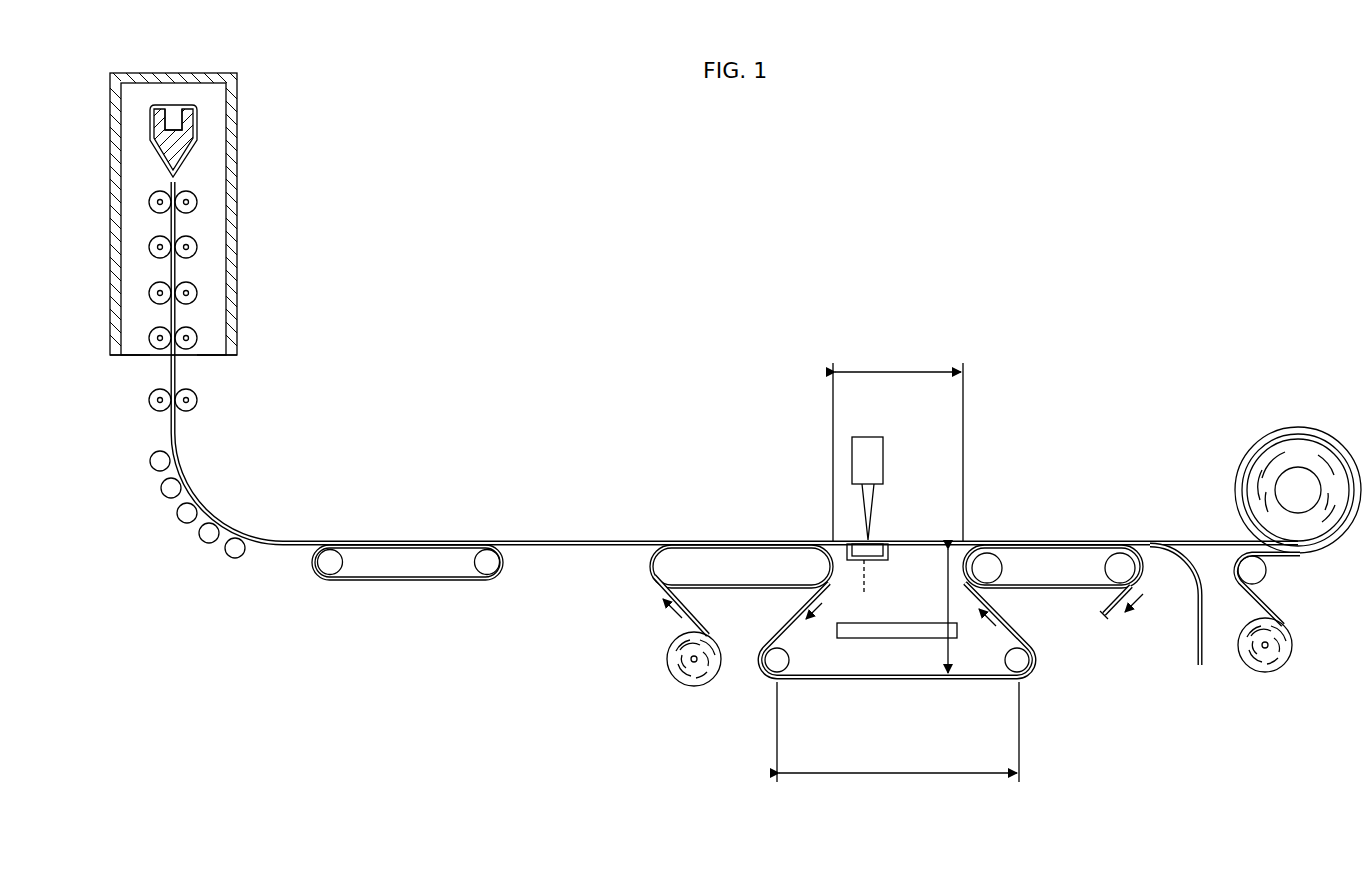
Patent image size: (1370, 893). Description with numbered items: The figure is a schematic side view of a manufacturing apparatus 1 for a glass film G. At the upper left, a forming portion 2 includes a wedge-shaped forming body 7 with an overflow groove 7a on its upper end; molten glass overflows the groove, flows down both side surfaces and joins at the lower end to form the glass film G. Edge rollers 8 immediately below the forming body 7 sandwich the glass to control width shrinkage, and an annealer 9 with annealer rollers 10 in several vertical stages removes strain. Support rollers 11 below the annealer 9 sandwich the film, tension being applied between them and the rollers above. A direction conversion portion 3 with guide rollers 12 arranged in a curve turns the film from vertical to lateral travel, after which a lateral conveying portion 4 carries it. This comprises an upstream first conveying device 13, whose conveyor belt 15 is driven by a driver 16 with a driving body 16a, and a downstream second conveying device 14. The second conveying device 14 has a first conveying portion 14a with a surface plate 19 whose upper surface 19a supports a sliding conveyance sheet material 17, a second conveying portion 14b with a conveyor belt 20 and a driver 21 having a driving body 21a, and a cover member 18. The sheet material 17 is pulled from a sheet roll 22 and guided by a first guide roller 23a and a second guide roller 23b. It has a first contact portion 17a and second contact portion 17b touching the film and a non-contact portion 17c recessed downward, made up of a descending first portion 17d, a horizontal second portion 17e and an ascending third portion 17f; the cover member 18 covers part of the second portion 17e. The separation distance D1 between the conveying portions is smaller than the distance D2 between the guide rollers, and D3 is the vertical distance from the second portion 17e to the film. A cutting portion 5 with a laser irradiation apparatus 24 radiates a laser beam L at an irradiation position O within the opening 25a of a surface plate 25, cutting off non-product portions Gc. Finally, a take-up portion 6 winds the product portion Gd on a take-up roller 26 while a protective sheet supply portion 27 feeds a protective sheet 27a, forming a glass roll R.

The manufacturing apparatus 1 is at (1056, 160).
The forming portion 2 is at (272, 102).
The direction conversion portion 3 is at (171, 522).
The lateral conveying portion 4 is at (381, 637).
The cutting portion 5 is at (982, 434).
The take-up portion 6 is at (1338, 430).
The forming body 7 is at (160, 156).
The overflow groove 7a is at (172, 116).
The edge rollers 8 is at (198, 200).
The annealer 9 is at (134, 234).
The annealer rollers 10 is at (198, 246).
The support rollers 11 is at (198, 400).
The guide rollers 12 is at (149, 462).
The first conveying device 13 is at (419, 587).
The second conveying device 14 is at (641, 668).
The first conveying portion 14a is at (683, 527).
The second conveying portion 14b is at (1050, 526).
The conveyor belt 15 is at (355, 582).
The driver 16 is at (471, 571).
The driving body 16a is at (492, 582).
The conveyance sheet material 17 is at (878, 615).
The first contact portion 17a is at (727, 543).
The second contact portion 17b is at (1000, 544).
The non-contact portion 17c is at (926, 680).
The first portion 17d is at (777, 625).
The second portion 17e is at (871, 680).
The third portion 17f is at (1023, 628).
The cover member 18 is at (878, 640).
The surface plate 19 is at (728, 589).
The upper surface 19a is at (777, 545).
The conveyor belt 20 is at (1080, 589).
The driver 21 is at (1109, 555).
The driving body 21a is at (1121, 552).
The sheet roll 22 is at (681, 683).
The first guide roller 23a is at (789, 674).
The second guide roller 23b is at (1010, 673).
The laser irradiation apparatus 24 is at (868, 436).
The surface plate 25 is at (880, 562).
The opening 25a is at (863, 589).
The take-up roller 26 is at (1302, 479).
The protective sheet supply portion 27 is at (1248, 681).
The protective sheet 27a is at (1270, 610).
The glass film G is at (173, 270).
The non-product portions Gc is at (1196, 656).
The product portion Gd is at (1198, 534).
The laser beam L is at (872, 506).
The irradiation position O is at (870, 536).
The glass roll R is at (1257, 440).
The separation distance D1 is at (898, 443).
The separation distance D2 is at (898, 732).
The separation distance D3 is at (948, 606).